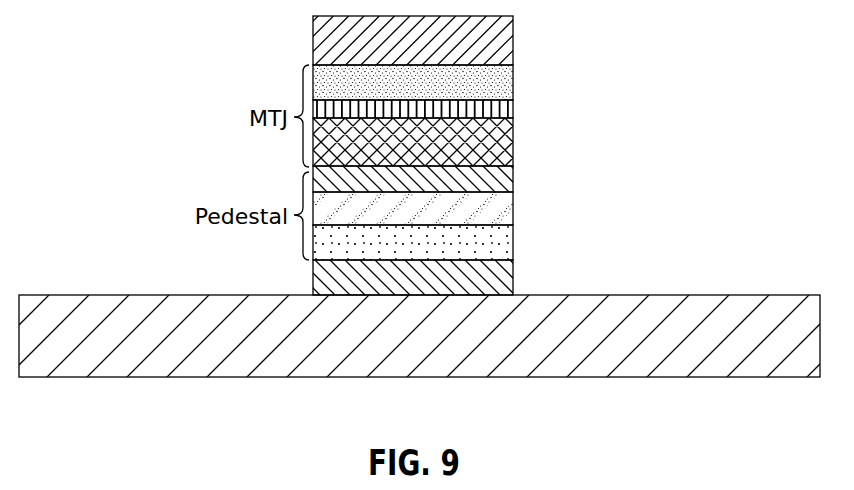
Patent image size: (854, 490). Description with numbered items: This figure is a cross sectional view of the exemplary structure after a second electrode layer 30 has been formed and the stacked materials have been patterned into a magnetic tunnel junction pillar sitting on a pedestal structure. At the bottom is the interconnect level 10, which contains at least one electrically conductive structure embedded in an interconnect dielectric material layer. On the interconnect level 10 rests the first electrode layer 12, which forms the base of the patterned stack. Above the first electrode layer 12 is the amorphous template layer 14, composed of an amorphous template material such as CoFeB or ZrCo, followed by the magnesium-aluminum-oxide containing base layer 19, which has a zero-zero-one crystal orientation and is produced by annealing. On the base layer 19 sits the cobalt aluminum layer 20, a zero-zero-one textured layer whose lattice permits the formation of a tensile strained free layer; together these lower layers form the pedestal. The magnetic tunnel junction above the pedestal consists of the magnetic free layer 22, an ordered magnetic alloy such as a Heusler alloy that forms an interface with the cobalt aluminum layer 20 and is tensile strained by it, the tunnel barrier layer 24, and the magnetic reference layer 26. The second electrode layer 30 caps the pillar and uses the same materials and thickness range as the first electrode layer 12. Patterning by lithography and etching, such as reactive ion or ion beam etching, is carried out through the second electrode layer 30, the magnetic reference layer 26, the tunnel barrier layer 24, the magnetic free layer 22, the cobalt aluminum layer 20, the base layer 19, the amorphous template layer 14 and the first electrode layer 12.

The interconnect level 10 is at (398, 348).
The first electrode layer 12 is at (398, 288).
The amorphous template layer 14 is at (398, 252).
The magnesium-aluminum-oxide containing base layer 19 is at (398, 220).
The cobalt aluminum layer 20 is at (508, 179).
The magnetic free layer 22 is at (398, 154).
The tunnel barrier layer 24 is at (508, 104).
The magnetic reference layer 26 is at (398, 94).
The second electrode layer 30 is at (398, 53).